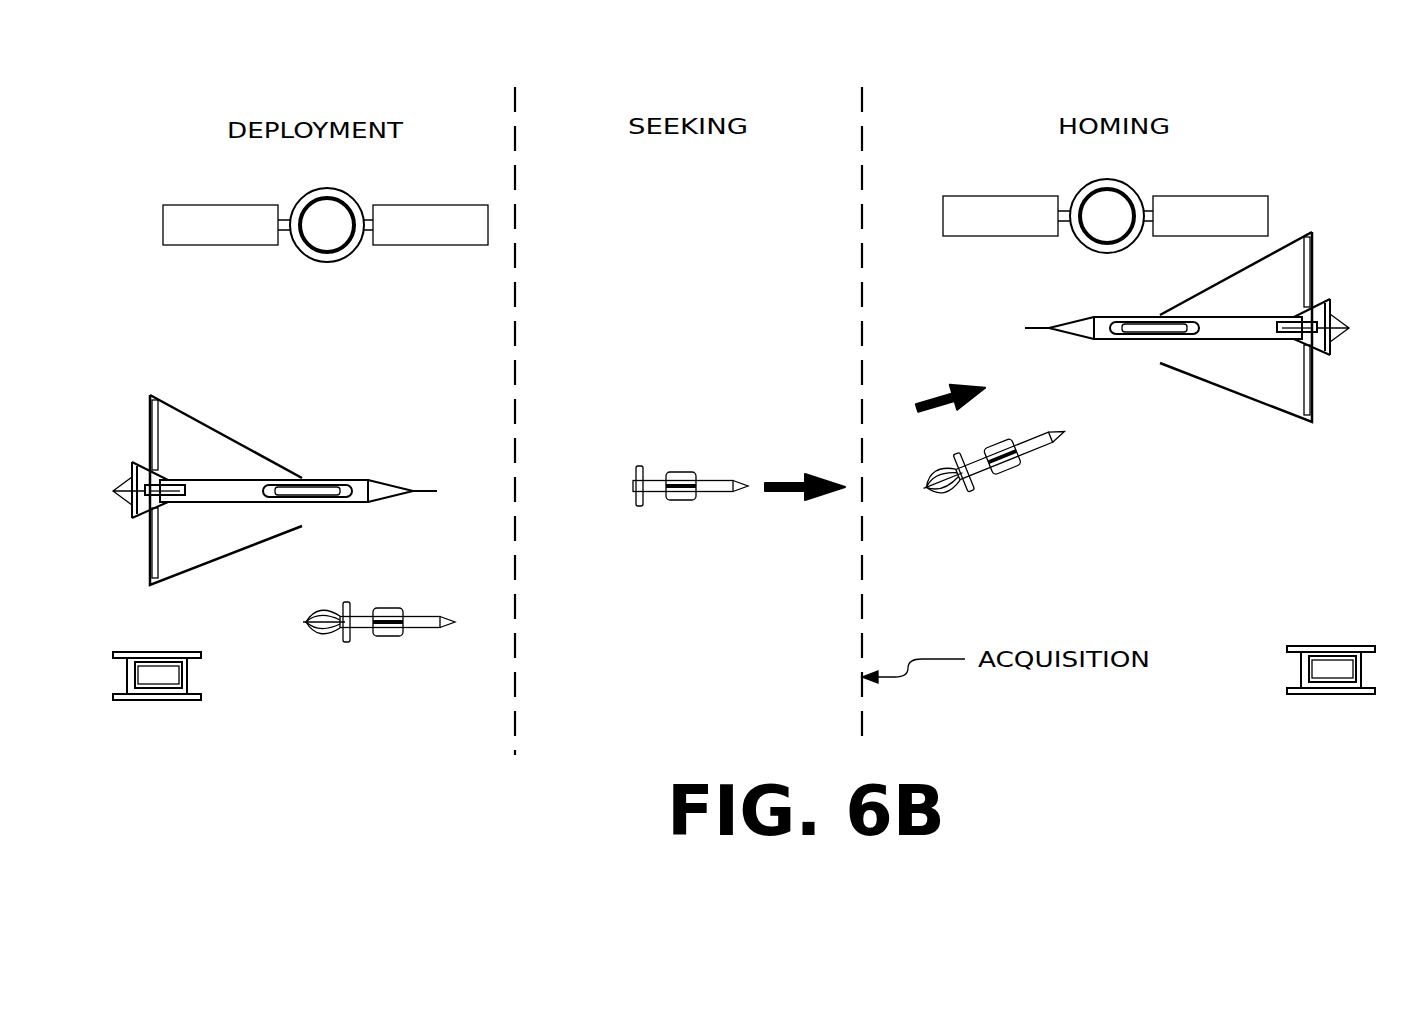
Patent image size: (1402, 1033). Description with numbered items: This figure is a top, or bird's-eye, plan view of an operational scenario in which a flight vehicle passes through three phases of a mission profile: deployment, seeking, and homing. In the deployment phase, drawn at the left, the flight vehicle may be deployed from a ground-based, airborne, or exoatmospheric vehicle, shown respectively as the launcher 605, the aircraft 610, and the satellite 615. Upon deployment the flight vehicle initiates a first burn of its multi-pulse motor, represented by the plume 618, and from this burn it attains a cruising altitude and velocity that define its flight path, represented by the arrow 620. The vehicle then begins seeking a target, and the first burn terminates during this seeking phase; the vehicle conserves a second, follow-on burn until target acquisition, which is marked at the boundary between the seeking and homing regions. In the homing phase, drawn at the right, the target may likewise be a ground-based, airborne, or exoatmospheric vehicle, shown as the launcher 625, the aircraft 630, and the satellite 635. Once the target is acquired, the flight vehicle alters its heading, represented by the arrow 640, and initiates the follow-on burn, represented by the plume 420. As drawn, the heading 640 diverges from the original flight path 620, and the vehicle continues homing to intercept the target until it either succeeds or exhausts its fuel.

The plume 420 is at (950, 468).
The launcher 605 is at (190, 686).
The aircraft 610 is at (389, 478).
The satellite 615 is at (332, 262).
The plume 618 is at (318, 618).
The arrow 620 is at (783, 493).
The launcher 625 is at (1310, 645).
The aircraft 630 is at (1218, 380).
The satellite 635 is at (1100, 255).
The arrow 640 is at (937, 400).